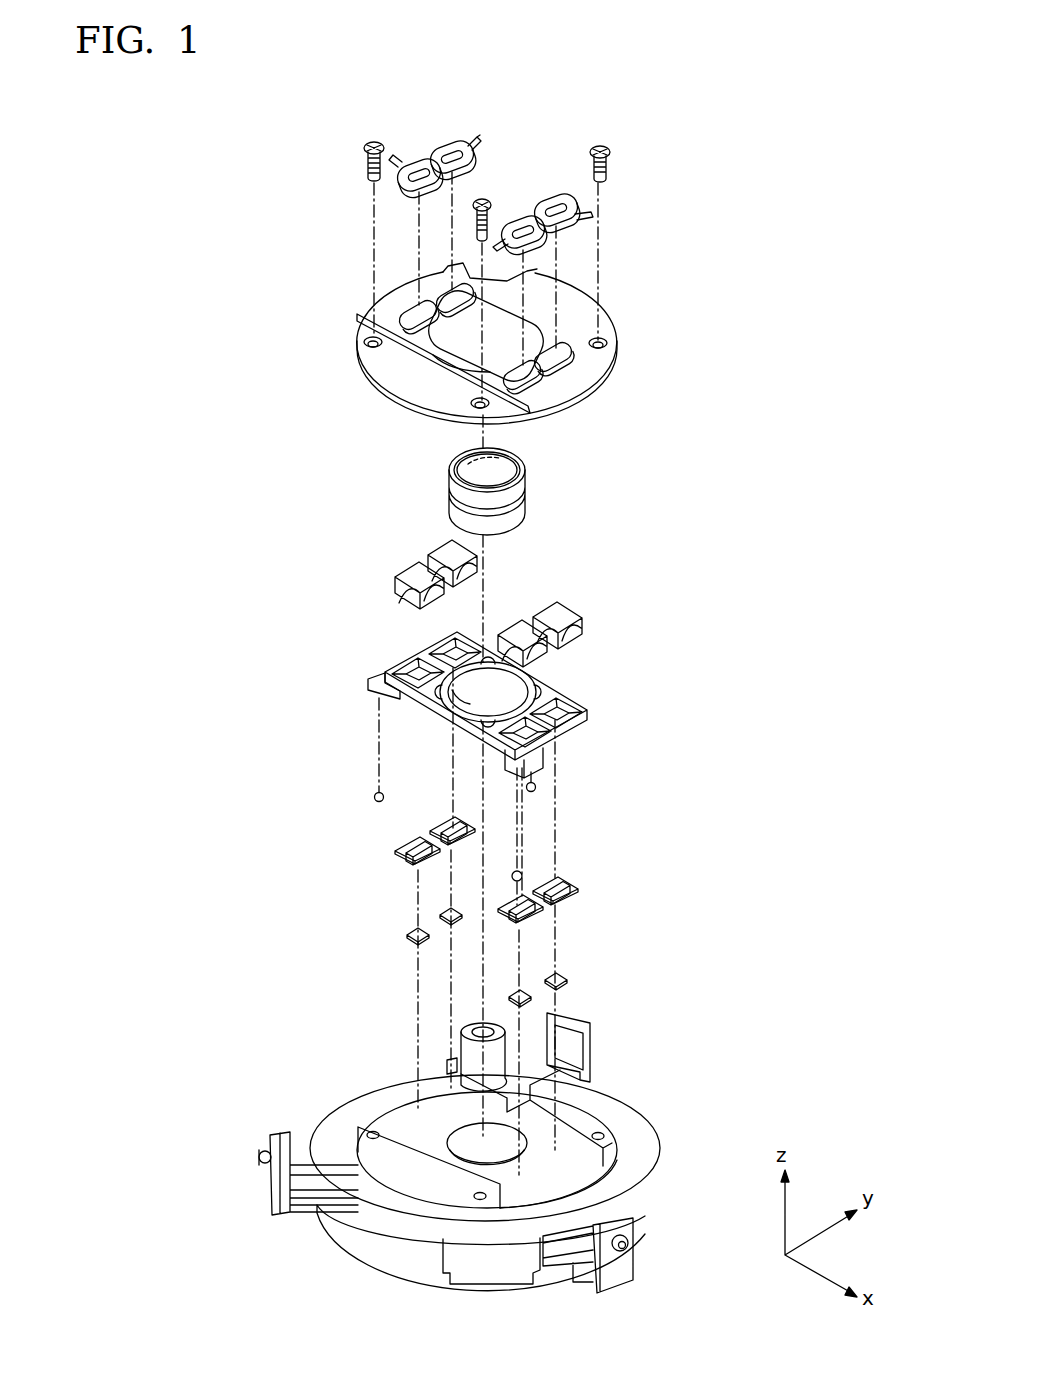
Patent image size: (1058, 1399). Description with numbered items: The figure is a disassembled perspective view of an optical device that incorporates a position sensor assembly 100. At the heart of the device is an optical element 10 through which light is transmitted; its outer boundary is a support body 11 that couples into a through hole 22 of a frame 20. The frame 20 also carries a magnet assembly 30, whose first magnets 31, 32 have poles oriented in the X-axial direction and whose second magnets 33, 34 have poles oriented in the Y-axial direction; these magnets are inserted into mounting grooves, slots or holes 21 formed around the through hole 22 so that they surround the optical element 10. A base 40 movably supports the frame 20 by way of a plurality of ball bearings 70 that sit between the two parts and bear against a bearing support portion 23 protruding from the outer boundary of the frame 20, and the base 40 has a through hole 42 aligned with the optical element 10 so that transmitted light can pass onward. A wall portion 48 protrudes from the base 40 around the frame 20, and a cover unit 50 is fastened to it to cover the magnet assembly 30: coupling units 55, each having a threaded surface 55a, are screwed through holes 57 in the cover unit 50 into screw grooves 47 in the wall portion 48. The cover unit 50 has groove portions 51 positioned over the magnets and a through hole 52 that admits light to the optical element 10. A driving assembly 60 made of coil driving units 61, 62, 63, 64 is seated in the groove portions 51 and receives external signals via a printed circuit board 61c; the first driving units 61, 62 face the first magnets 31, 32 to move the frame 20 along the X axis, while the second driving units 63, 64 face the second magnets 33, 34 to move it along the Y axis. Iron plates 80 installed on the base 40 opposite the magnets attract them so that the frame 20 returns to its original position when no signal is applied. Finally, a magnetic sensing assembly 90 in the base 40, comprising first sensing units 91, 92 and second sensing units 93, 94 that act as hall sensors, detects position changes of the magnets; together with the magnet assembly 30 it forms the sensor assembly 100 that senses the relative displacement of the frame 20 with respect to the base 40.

The position sensor assembly 100 is at (683, 852).
The driving assembly 60 is at (385, 66).
The first driving unit 61 is at (475, 124).
The printed circuit board 61c is at (475, 135).
The first driving unit 62 is at (521, 226).
The second driving unit 63 is at (419, 160).
The second driving unit 64 is at (554, 202).
The coupling unit 55 is at (340, 143).
The threaded surface 55a is at (366, 170).
The cover unit 50 is at (504, 352).
The groove portion 51 is at (407, 290).
The through hole 52 is at (432, 355).
The hole 57 is at (558, 428).
The optical element 10 is at (442, 485).
The support body 11 is at (449, 492).
The magnet assembly 30 is at (546, 519).
The first magnet 31 is at (463, 557).
The first magnet 32 is at (517, 627).
The second magnet 33 is at (435, 582).
The second magnet 34 is at (567, 617).
The frame 20 is at (455, 708).
The mounting hole 21 is at (590, 710).
The through hole 22 is at (455, 688).
The bearing support portion 23 is at (378, 674).
The ball bearing 70 is at (373, 797).
The magnetic sensing assembly 90 is at (612, 805).
The first sensing unit 91 is at (475, 833).
The first sensing unit 92 is at (543, 912).
The second sensing unit 93 is at (440, 856).
The second sensing unit 94 is at (575, 889).
The iron plate 80 is at (415, 928).
The base 40 is at (517, 1153).
The through hole 42 is at (470, 1135).
The screw groove 47 is at (370, 1134).
The wall portion 48 is at (425, 1183).